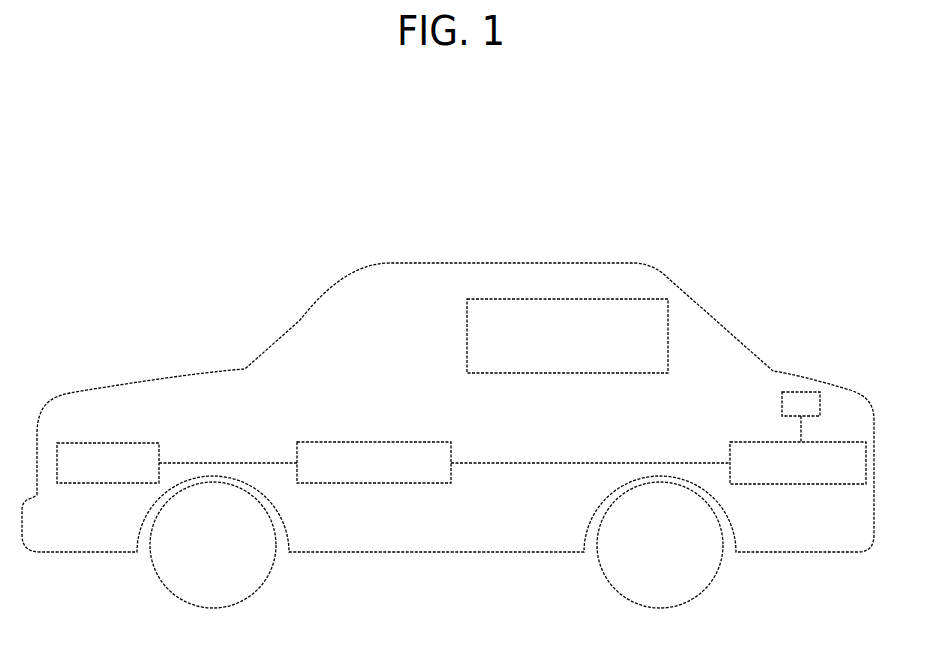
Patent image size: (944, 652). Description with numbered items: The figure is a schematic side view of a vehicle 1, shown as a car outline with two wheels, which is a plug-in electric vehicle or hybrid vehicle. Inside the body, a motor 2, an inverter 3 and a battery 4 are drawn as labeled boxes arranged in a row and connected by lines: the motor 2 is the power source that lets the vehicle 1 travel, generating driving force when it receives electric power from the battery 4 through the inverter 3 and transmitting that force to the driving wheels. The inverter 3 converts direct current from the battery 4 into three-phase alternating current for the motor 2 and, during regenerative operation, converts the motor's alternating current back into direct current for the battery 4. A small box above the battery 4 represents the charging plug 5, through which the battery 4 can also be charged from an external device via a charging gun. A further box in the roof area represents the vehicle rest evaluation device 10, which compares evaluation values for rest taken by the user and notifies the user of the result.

The vehicle 1 is at (207, 210).
The motor 2 is at (123, 443).
The inverter 3 is at (402, 442).
The battery 4 is at (766, 442).
The charging plug 5 is at (800, 392).
The vehicle rest evaluation device 10 is at (588, 299).